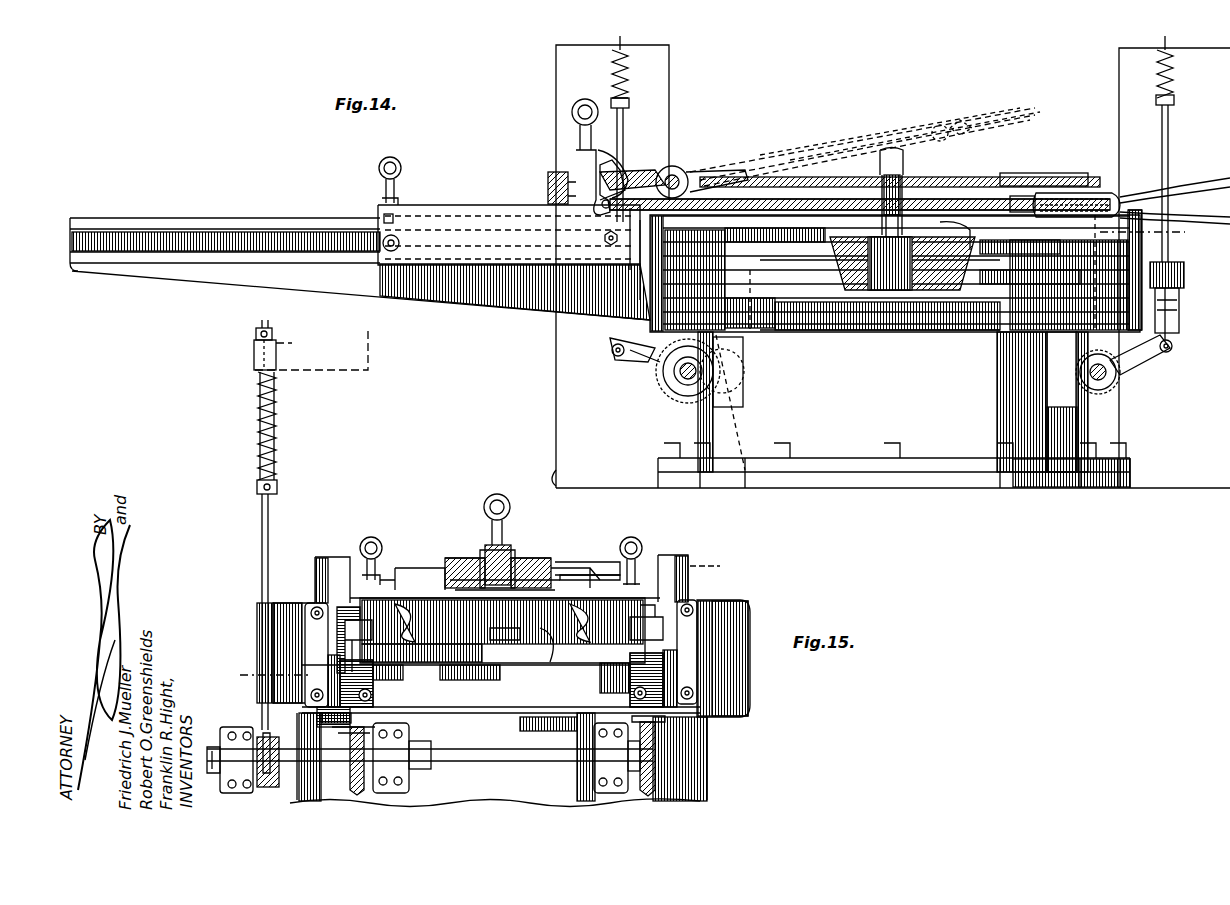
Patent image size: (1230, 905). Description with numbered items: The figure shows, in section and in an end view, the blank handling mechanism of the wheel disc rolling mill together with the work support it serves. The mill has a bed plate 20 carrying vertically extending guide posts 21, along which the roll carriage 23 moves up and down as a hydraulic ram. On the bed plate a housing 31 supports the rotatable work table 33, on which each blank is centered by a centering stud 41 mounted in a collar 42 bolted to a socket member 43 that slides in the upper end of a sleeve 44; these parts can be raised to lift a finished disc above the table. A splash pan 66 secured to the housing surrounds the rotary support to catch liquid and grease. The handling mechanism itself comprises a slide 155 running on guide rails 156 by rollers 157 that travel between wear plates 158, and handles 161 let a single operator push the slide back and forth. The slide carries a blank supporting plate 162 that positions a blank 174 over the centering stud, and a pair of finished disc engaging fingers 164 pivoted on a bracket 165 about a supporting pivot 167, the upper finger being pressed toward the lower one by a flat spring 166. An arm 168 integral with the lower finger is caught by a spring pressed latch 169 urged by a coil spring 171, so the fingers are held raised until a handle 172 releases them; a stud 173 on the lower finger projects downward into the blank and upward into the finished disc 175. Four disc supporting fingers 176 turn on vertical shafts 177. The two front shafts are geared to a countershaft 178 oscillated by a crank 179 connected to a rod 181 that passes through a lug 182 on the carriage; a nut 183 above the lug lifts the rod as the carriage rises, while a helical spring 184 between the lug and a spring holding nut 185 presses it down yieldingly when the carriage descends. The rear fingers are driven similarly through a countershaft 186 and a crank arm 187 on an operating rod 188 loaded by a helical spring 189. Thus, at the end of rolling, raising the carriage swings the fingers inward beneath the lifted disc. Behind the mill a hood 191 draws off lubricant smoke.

In FIG. 14, the bed plate 20 is at (553, 468).
In FIG. 14, the guide posts 21 is at (1120, 114).
In FIG. 15, the roll carriage 23 is at (348, 360).
In FIG. 14, the housing 31 is at (832, 440).
In FIG. 15, the housing 31 is at (700, 773).
In FIG. 14, the work table 33 is at (770, 260).
In FIG. 14, the centering stud 41 is at (905, 229).
In FIG. 14, the collar 42 is at (875, 255).
In FIG. 14, the socket member 43 is at (905, 270).
In FIG. 14, the sleeve 44 is at (945, 268).
In FIG. 14, the splash pan 66 is at (1184, 259).
In FIG. 15, the splash pan 66 is at (748, 677).
In FIG. 14, the slide 155 is at (440, 212).
In FIG. 15, the slide 155 is at (555, 660).
In FIG. 14, the guide rails 156 is at (215, 240).
In FIG. 15, the guide rails 156 is at (310, 620).
In FIG. 15, the rollers 157 is at (372, 640).
In FIG. 15, the wear plates 158 is at (373, 677).
In FIG. 14, the handles 161 is at (398, 185).
In FIG. 15, the handles 161 is at (376, 539).
In FIG. 14, the blank supporting plate 162 is at (795, 262).
In FIG. 14, the finished disc engaging fingers 164 is at (955, 128).
In FIG. 14, the bracket 165 is at (710, 195).
In FIG. 15, the bracket 165 is at (548, 572).
In FIG. 14, the flat spring 166 is at (628, 170).
In FIG. 14, the supporting pivot 167 is at (680, 170).
In FIG. 14, the arm 168 is at (680, 166).
In FIG. 15, the arm 168 is at (460, 568).
In FIG. 14, the latch 169 is at (578, 160).
In FIG. 15, the latch 169 is at (512, 555).
In FIG. 14, the coil spring 171 is at (546, 178).
In FIG. 14, the handle 172 is at (580, 112).
In FIG. 15, the handle 172 is at (480, 523).
In FIG. 14, the stud 173 is at (905, 190).
In FIG. 14, the blank 174 is at (1000, 205).
In FIG. 15, the blank 174 is at (432, 562).
In FIG. 14, the finished disc 175 is at (1003, 120).
In FIG. 15, the finished disc 175 is at (560, 565).
In FIG. 14, the disc supporting fingers 176 is at (1060, 167).
In FIG. 15, the disc supporting fingers 176 is at (418, 570).
In FIG. 14, the shafts 177 is at (1160, 241).
In FIG. 15, the shafts 177 is at (262, 676).
In FIG. 14, the countershaft 178 is at (680, 380).
In FIG. 15, the countershaft 178 is at (485, 763).
In FIG. 14, the crank 179 is at (655, 362).
In FIG. 15, the crank 179 is at (264, 787).
In FIG. 14, the rod 181 is at (625, 118).
In FIG. 15, the rod 181 is at (272, 549).
In FIG. 15, the lug 182 is at (254, 375).
In FIG. 15, the nut 183 is at (255, 345).
In FIG. 14, the helical spring 184 is at (615, 62).
In FIG. 15, the helical spring 184 is at (277, 437).
In FIG. 15, the spring holding nut 185 is at (278, 488).
In FIG. 14, the countershaft 186 is at (1105, 395).
In FIG. 14, the crank arm 187 is at (1140, 362).
In FIG. 14, the operating rod 188 is at (1169, 164).
In FIG. 14, the helical spring 189 is at (1173, 80).
In FIG. 14, the hood 191 is at (1125, 195).